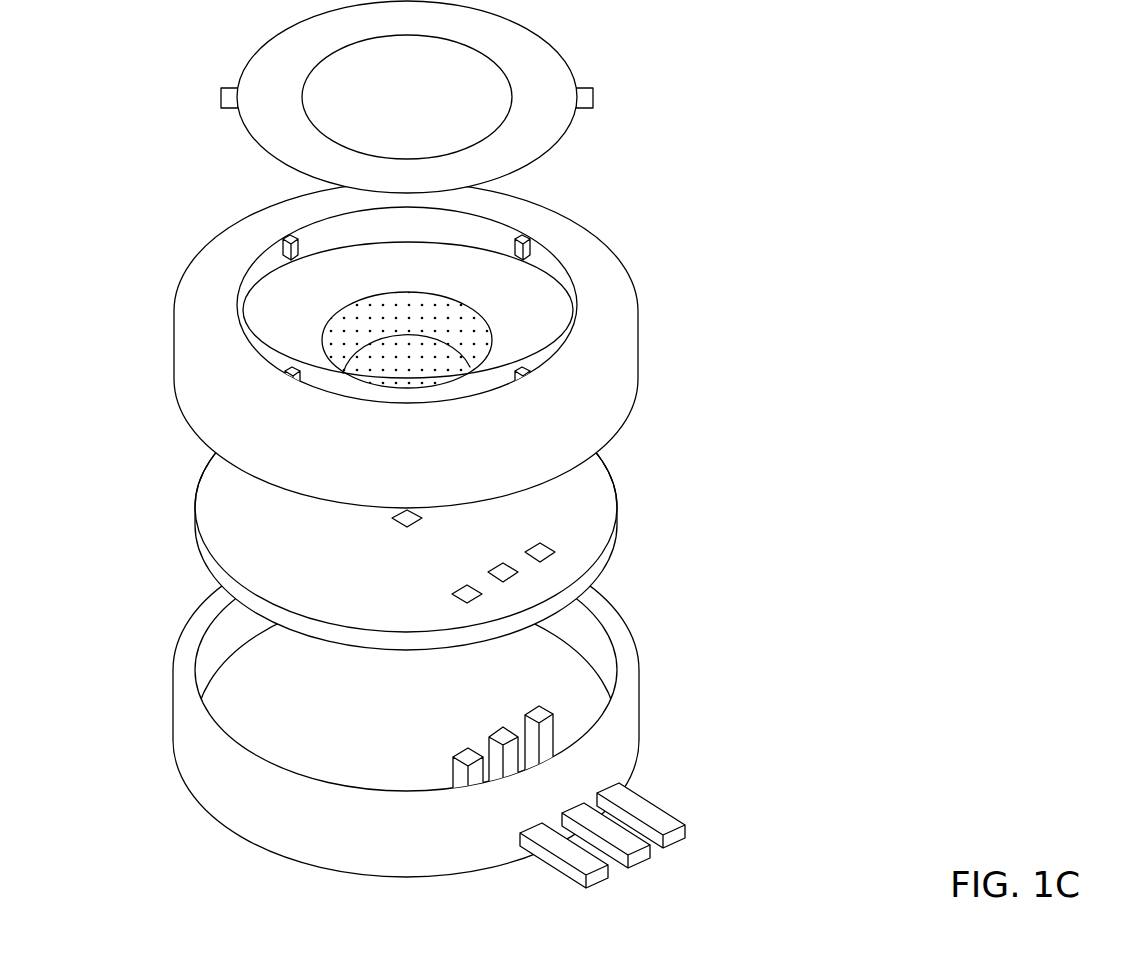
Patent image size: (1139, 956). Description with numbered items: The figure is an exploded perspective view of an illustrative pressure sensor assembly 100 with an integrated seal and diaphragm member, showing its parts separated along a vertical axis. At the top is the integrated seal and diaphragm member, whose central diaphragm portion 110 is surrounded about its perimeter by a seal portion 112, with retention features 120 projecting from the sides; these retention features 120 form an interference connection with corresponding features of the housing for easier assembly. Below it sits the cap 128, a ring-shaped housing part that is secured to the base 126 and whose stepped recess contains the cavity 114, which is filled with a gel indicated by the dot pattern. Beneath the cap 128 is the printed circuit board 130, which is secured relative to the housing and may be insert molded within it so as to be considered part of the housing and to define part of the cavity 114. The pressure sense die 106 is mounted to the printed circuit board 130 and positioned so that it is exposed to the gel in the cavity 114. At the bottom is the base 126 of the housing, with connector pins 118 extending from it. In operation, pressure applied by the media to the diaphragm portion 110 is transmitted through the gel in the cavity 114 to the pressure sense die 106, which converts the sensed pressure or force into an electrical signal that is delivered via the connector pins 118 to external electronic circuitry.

The pressure sensor assembly 100 is at (762, 95).
The pressure sense die 106 is at (418, 522).
The diaphragm portion 110 is at (330, 113).
The seal portion 112 is at (522, 58).
The cavity 114 is at (456, 333).
The connector pins 118 is at (631, 853).
The retention features 120 is at (226, 89).
The base 126 is at (222, 802).
The cap 128 is at (183, 362).
The printed circuit board 130 is at (211, 512).